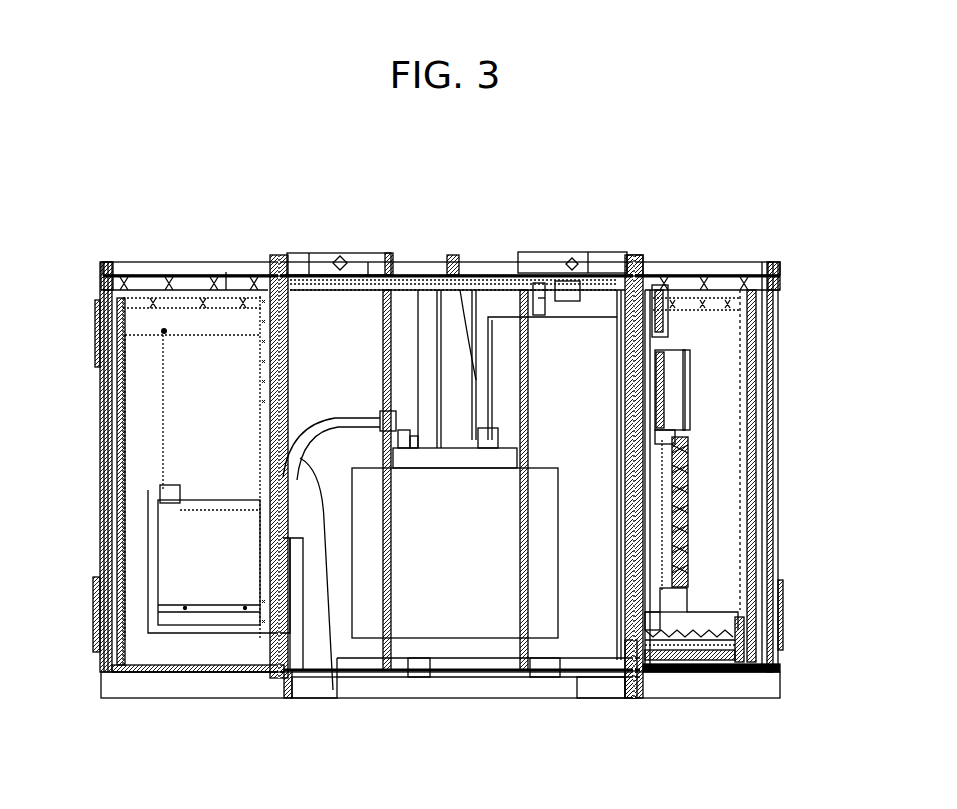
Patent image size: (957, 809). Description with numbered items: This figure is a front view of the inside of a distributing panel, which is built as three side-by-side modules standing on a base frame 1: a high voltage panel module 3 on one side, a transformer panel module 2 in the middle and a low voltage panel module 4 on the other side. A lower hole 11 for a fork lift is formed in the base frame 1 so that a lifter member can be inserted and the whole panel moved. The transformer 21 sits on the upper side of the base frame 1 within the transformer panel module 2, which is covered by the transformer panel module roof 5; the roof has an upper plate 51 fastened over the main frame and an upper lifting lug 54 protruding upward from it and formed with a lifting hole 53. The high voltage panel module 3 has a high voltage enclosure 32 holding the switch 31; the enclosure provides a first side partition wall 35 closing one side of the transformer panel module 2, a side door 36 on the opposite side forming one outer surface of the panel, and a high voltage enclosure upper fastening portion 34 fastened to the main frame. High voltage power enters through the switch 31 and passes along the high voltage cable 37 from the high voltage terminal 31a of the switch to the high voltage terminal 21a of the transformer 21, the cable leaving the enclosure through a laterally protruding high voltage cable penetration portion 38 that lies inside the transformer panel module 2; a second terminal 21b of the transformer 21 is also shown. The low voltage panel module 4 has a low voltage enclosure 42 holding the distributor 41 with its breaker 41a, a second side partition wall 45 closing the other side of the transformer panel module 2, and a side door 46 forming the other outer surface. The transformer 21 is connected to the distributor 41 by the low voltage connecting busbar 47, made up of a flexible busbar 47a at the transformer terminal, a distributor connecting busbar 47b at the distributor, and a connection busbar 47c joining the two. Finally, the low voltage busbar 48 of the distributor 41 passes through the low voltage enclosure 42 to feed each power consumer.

The base frame 1 is at (732, 688).
The transformer panel module 2 is at (600, 625).
The high voltage panel module 3 is at (84, 614).
The low voltage panel module 4 is at (797, 613).
The transformer panel module roof 5 is at (290, 250).
The lower hole for fork lift 11 is at (305, 690).
The transformer 21 is at (455, 620).
The high voltage terminal 21a is at (419, 280).
The secondary bushing 21b is at (447, 280).
The switch 31 is at (178, 390).
The high voltage terminal 31a is at (110, 468).
The high voltage enclosure 32 is at (196, 658).
The high voltage enclosure upper fastening portion 34 is at (309, 258).
The first side partition wall 35 is at (226, 272).
The side door 36 is at (110, 540).
The high voltage cable 37 is at (338, 690).
The high voltage cable penetration portion 38 is at (314, 677).
The distributor 41 is at (702, 441).
The breaker 41a is at (683, 390).
The low voltage enclosure 42 is at (674, 622).
The second side partition wall 45 is at (618, 255).
The side door 46 is at (780, 522).
The low voltage connecting busbar 47 is at (588, 252).
The flexible busbar 47a is at (470, 280).
The distributor connecting busbar 47b is at (676, 262).
The connection busbar 47c is at (494, 280).
The low voltage busbar 48 is at (710, 612).
The upper plate 51 is at (410, 264).
The lifting hole 53 is at (339, 253).
The upper lifting lug 54 is at (368, 262).